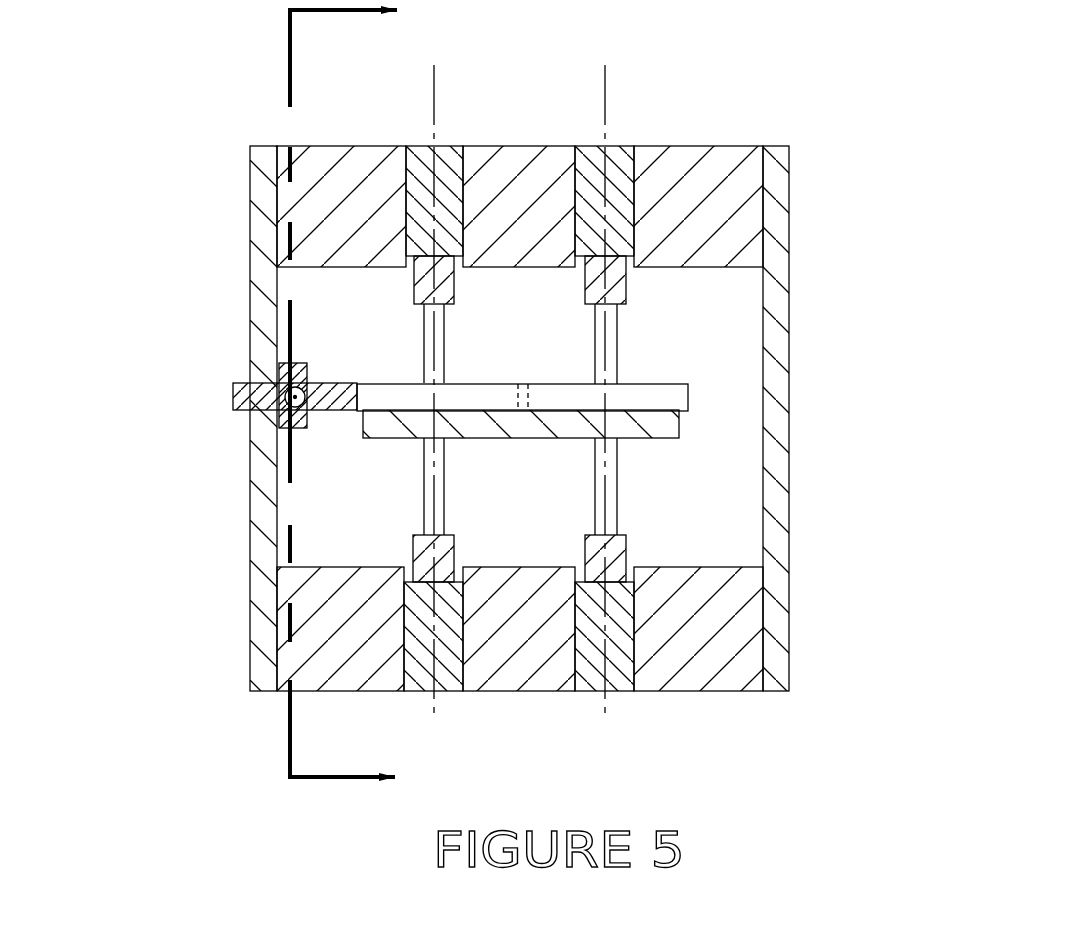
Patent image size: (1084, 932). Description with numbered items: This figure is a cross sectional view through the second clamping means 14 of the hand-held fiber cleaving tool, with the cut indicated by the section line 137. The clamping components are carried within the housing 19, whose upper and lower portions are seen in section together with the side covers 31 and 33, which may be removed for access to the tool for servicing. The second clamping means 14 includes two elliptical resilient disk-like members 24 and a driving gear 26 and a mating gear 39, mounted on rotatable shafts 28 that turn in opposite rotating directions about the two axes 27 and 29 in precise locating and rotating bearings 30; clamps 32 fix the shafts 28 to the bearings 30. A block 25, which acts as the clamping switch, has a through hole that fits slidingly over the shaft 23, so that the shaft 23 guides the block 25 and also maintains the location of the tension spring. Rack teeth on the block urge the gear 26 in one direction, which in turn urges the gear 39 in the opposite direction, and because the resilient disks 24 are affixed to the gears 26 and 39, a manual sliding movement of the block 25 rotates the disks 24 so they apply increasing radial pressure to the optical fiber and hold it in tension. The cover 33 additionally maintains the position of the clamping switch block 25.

The second clamping means 14 is at (681, 609).
The housing 19 is at (579, 629).
The shaft 23 is at (225, 414).
The resilient disk-like members 24 is at (512, 488).
The block 25 is at (156, 385).
The driving gear 26 is at (249, 371).
The axis 27 is at (659, 377).
The rotatable shaft 28 is at (499, 391).
The axis 29 is at (479, 383).
The bearing 30 is at (520, 165).
The cover 31 is at (848, 418).
The clamp 32 is at (509, 334).
The cover 33 is at (190, 418).
The gear 39 is at (624, 415).
The section line 137 is at (378, 399).